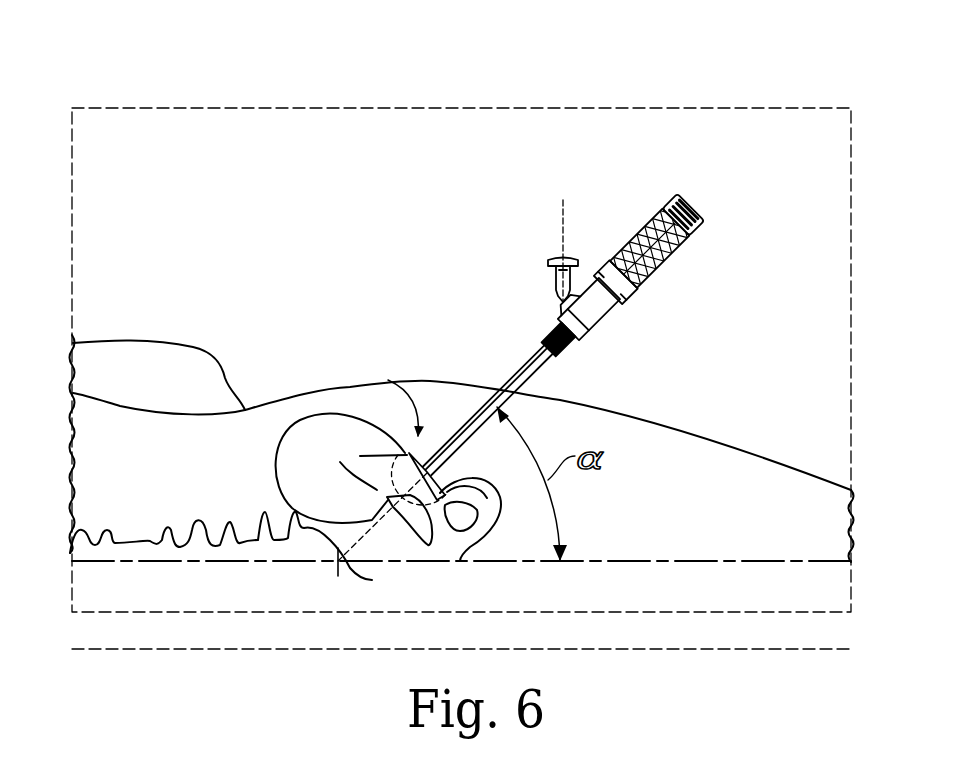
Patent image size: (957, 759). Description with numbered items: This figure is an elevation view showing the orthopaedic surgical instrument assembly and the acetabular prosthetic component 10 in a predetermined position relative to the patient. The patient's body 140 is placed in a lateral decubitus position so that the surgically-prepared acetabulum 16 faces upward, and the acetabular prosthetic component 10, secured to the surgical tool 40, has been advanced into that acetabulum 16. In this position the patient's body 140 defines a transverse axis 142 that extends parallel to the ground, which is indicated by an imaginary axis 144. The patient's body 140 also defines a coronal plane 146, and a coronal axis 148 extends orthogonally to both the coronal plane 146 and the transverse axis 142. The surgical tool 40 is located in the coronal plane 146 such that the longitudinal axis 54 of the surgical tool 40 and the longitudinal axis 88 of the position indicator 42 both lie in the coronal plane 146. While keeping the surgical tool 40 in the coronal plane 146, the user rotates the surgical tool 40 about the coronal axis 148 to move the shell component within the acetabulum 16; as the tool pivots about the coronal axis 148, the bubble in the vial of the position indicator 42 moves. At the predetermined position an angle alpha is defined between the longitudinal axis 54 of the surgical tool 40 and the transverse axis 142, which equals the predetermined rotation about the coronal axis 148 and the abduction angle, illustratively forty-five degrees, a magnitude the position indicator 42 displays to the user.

The acetabular prosthetic component 10 is at (547, 348).
The surgically-prepared acetabulum 16 is at (392, 395).
The surgical tool 40 is at (580, 322).
The position indicator 42 is at (556, 270).
The longitudinal axis 54 is at (527, 363).
The longitudinal axis 88 is at (565, 228).
The patient's body 140 is at (253, 420).
The transverse axis 142 is at (688, 560).
The imaginary axis 144 is at (693, 650).
The coronal plane 146 is at (437, 108).
The coronal axis 148 is at (340, 565).